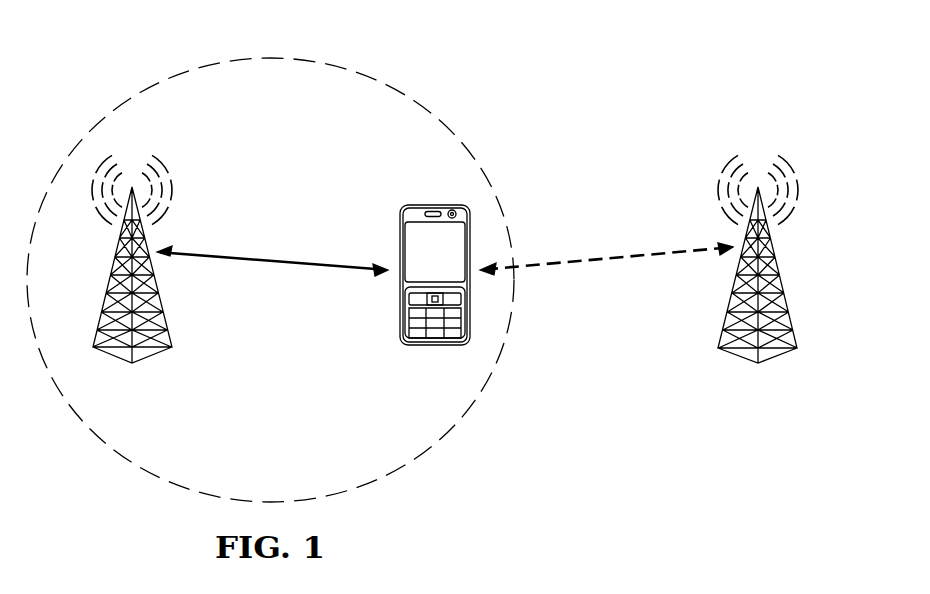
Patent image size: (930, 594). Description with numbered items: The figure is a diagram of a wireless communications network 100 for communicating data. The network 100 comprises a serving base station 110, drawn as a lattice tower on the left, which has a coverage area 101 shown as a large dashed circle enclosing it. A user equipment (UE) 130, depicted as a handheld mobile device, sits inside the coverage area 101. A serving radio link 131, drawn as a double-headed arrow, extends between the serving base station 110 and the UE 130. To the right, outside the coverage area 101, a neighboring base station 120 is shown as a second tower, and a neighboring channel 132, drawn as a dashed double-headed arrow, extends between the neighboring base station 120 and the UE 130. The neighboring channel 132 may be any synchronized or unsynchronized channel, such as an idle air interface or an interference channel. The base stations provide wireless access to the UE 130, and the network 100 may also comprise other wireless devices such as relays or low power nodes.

The network 100 is at (747, 58).
The coverage area 101 is at (162, 82).
The serving base station 110 is at (153, 360).
The neighboring base station 120 is at (778, 358).
The user equipment (UE) 130 is at (433, 347).
The serving radio link 131 is at (257, 264).
The neighboring channel 132 is at (633, 256).